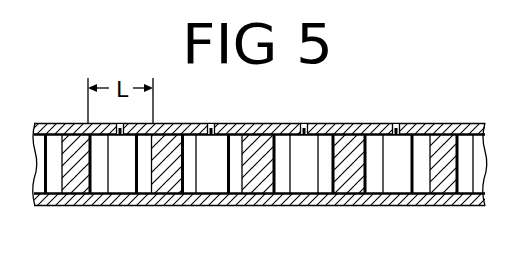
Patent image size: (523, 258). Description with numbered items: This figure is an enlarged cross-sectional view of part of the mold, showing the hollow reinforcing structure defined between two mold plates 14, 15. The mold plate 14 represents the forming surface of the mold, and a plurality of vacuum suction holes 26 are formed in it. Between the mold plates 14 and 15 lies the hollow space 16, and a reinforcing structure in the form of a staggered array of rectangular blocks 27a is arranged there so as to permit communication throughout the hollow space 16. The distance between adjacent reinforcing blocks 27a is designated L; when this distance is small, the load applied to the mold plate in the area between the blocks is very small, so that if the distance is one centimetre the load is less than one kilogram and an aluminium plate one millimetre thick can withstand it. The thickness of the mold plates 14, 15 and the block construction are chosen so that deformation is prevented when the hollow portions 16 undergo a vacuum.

The mold plate 14 is at (366, 131).
The mold plate 15 is at (118, 206).
The hollow space 16 is at (422, 155).
The vacuum suction holes 26 is at (307, 127).
The rectangular blocks 27a is at (177, 162).